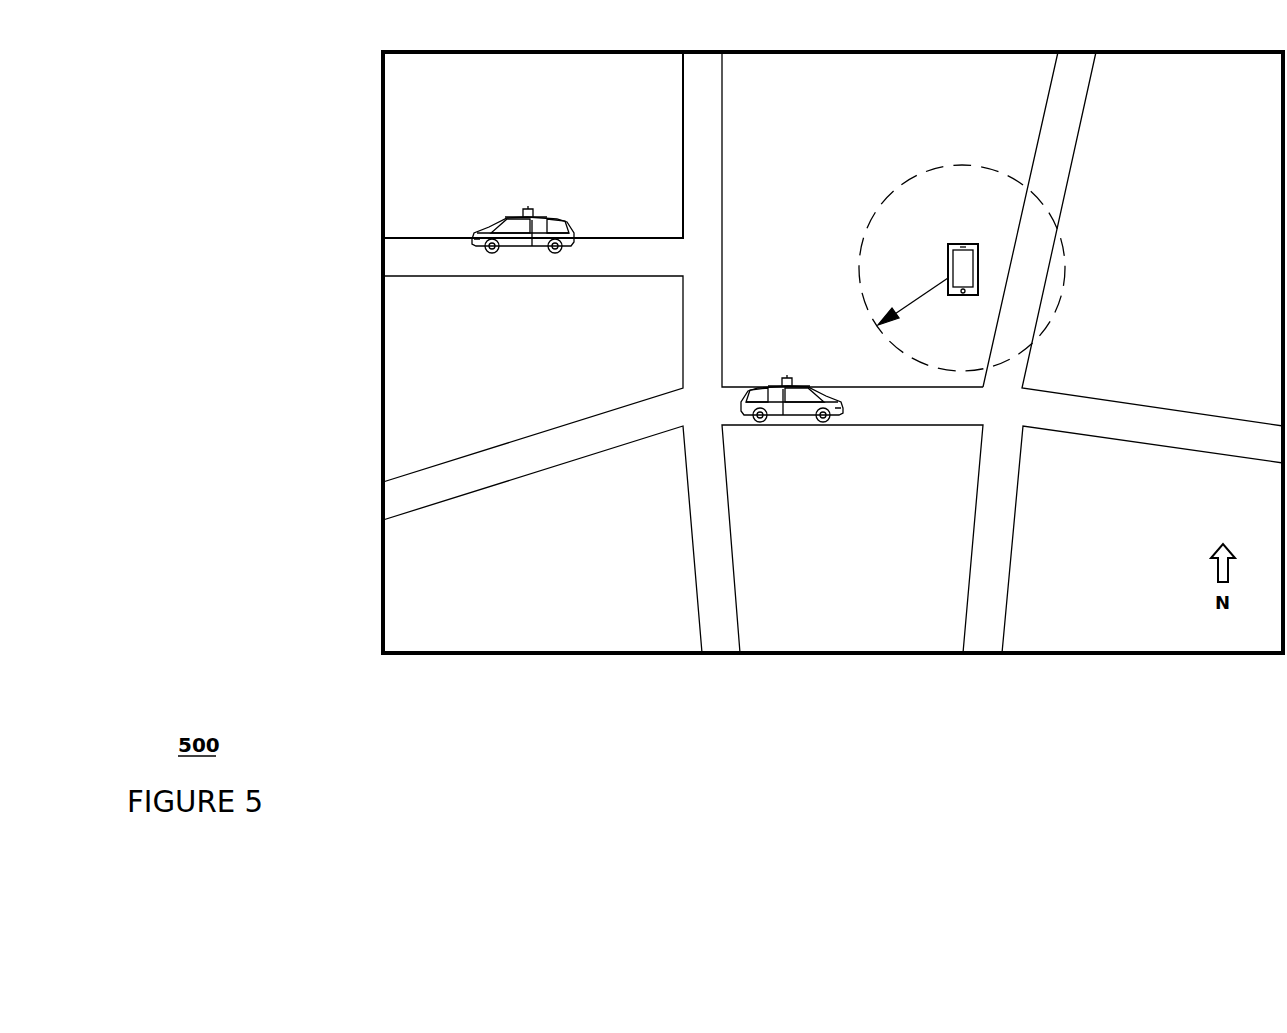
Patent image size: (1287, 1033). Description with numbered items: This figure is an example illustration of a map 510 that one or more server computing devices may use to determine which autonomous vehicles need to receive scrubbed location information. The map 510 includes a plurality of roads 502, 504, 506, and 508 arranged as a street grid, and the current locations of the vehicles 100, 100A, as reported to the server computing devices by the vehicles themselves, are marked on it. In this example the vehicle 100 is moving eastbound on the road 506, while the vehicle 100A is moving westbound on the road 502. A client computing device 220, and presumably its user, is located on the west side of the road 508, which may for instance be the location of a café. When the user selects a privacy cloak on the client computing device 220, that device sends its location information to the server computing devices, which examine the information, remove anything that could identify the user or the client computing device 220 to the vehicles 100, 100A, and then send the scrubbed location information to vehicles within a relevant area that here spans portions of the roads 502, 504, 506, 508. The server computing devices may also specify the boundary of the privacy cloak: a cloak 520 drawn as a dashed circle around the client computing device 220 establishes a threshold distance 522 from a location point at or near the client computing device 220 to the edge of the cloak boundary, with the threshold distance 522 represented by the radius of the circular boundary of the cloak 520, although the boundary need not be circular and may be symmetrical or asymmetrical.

The map 510 is at (382, 89).
The vehicle 100A is at (538, 214).
The road 504 is at (722, 200).
The road 508 is at (1070, 173).
The cloak 520 is at (1062, 252).
The client computing device 220 is at (963, 258).
The threshold distance 522 is at (865, 305).
The road 502 is at (520, 277).
The vehicle 100 is at (778, 420).
The road 506 is at (935, 427).